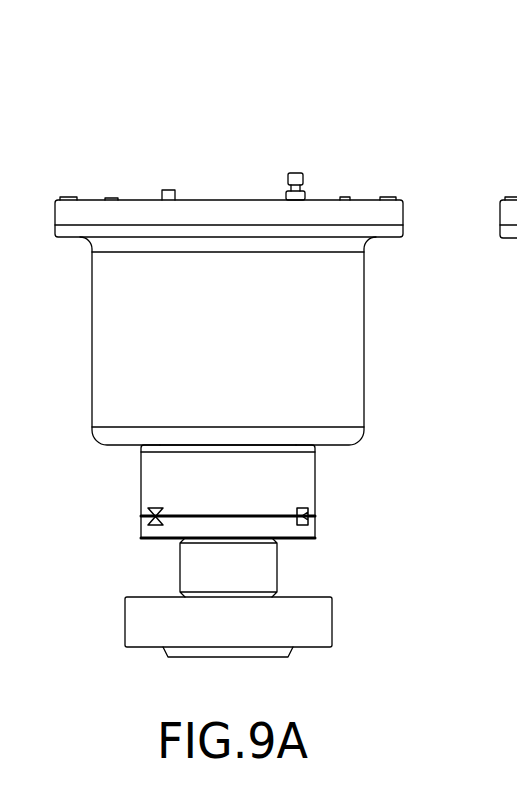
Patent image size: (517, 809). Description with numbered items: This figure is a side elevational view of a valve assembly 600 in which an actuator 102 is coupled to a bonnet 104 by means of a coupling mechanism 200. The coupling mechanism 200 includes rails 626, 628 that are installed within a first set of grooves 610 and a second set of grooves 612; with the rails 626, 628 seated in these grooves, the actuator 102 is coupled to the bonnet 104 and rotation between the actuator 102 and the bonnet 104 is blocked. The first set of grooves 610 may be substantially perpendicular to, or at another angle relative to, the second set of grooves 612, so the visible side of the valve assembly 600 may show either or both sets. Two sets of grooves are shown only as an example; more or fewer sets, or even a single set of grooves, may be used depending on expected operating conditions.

The valve assembly 600 is at (370, 103).
The actuator 102 is at (130, 207).
The coupling mechanism 200 is at (362, 510).
The first set of grooves 610 is at (147, 490).
The second set of grooves 612 is at (302, 488).
The rail 626 is at (150, 522).
The rail 628 is at (309, 522).
The bonnet 104 is at (145, 632).